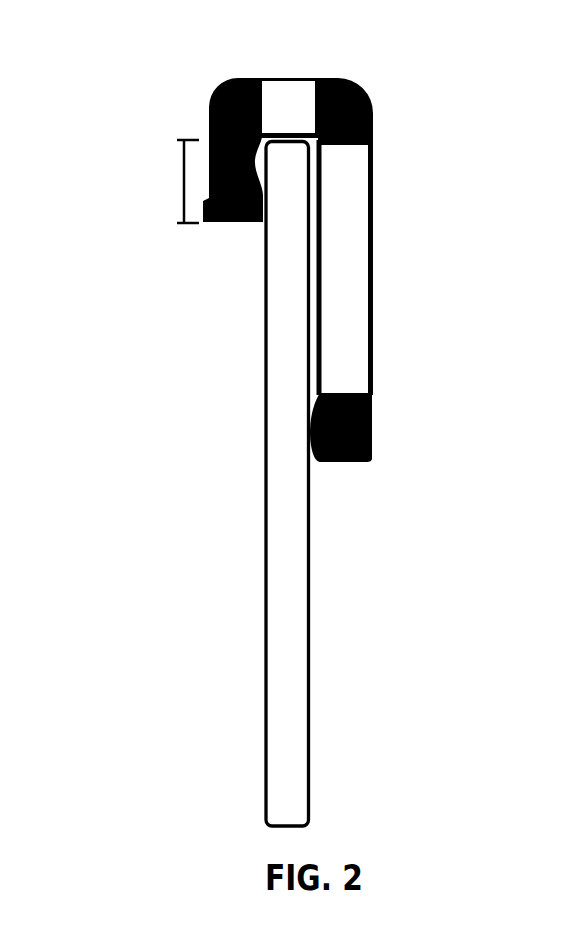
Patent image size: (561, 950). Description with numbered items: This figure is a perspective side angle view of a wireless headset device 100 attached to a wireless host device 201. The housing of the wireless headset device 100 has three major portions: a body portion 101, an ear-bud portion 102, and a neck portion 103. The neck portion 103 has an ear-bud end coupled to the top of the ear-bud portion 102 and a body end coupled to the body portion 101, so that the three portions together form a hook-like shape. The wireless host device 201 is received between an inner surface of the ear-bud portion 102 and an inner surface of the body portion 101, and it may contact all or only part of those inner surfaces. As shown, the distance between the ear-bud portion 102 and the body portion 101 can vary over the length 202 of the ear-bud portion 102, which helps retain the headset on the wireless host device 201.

The wireless headset device 100 is at (434, 143).
The body portion 101 is at (343, 252).
The ear-bud portion 102 is at (237, 229).
The neck portion 103 is at (288, 110).
The wireless host device 201 is at (287, 608).
The length of the ear-bud portion 202 is at (183, 190).